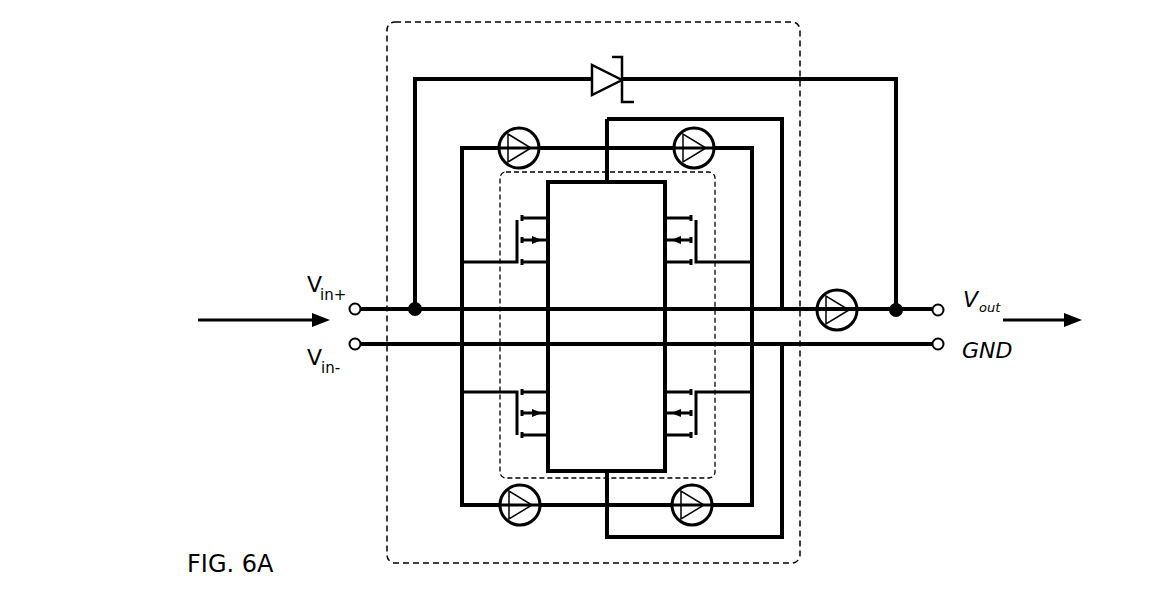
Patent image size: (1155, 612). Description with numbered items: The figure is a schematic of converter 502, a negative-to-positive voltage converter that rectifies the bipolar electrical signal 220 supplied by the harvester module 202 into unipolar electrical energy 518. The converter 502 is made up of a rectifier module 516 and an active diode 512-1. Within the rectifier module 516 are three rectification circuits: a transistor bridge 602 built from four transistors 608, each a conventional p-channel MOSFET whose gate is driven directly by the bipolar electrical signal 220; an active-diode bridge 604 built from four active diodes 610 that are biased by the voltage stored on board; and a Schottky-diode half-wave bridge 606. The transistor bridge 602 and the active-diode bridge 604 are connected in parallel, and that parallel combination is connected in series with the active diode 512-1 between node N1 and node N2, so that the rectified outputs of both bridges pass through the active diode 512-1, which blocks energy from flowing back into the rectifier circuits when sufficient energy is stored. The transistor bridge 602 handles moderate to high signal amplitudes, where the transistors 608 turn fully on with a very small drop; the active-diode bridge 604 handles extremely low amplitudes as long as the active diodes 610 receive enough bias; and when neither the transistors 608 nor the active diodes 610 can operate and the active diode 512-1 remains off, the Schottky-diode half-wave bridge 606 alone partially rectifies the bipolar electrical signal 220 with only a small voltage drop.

The converter 502 is at (211, 72).
The rectifier module 516 is at (387, 133).
The harvester module 202 is at (134, 330).
The bipolar electrical signal 220 is at (264, 333).
The node N1 is at (408, 302).
The node N2 is at (901, 303).
The Schottky-diode half-wave bridge 606 is at (658, 63).
The active-diode bridge 604 is at (436, 486).
The transistor bridge 602 is at (500, 357).
The transistors 608 is at (607, 329).
The active diodes 610 is at (609, 320).
The active diode 512-1 is at (838, 331).
The unipolar electrical energy 518 is at (1061, 307).